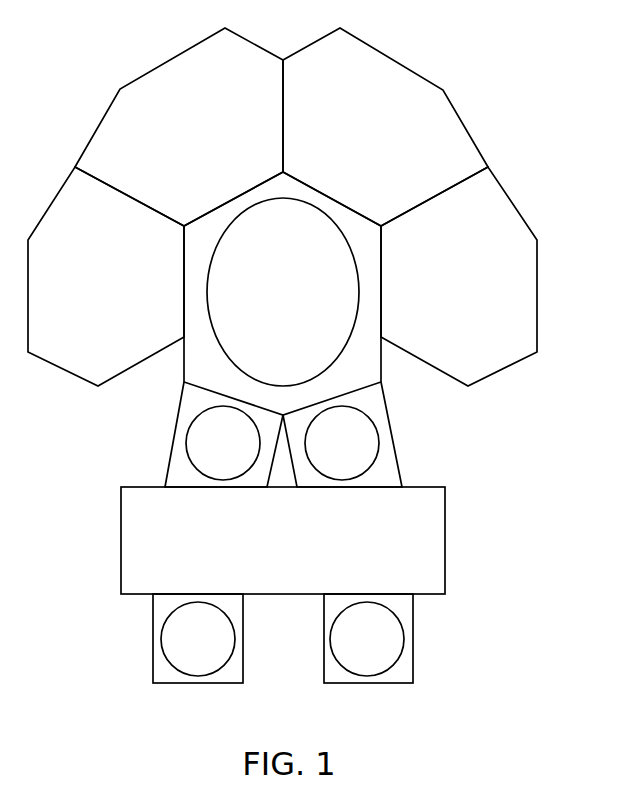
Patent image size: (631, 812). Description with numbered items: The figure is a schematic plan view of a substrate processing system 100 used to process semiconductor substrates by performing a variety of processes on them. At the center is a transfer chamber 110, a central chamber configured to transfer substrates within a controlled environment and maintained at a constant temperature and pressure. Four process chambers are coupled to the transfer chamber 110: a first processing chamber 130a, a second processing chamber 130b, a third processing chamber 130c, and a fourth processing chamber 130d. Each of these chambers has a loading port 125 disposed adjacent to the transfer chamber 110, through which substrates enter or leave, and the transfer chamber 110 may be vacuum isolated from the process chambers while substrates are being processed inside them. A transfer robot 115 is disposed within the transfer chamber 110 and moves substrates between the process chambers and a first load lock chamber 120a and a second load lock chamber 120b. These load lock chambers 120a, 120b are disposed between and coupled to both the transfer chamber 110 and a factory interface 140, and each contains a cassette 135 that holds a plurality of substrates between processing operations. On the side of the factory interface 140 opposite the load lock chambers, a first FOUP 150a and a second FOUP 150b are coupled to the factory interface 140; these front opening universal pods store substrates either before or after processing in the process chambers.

The substrate processing system 100 is at (507, 63).
The transfer chamber 110 is at (183, 363).
The transfer robot 115 is at (270, 305).
The loading port 125 is at (233, 198).
The first processing chamber 130a is at (117, 287).
The second processing chamber 130b is at (217, 145).
The third processing chamber 130c is at (334, 145).
The fourth processing chamber 130d is at (434, 287).
The first load lock chamber 120a is at (182, 443).
The second load lock chamber 120b is at (388, 433).
The cassette 135 is at (203, 453).
The factory interface 140 is at (265, 550).
The first FOUP 150a is at (177, 650).
The second FOUP 150b is at (340, 650).